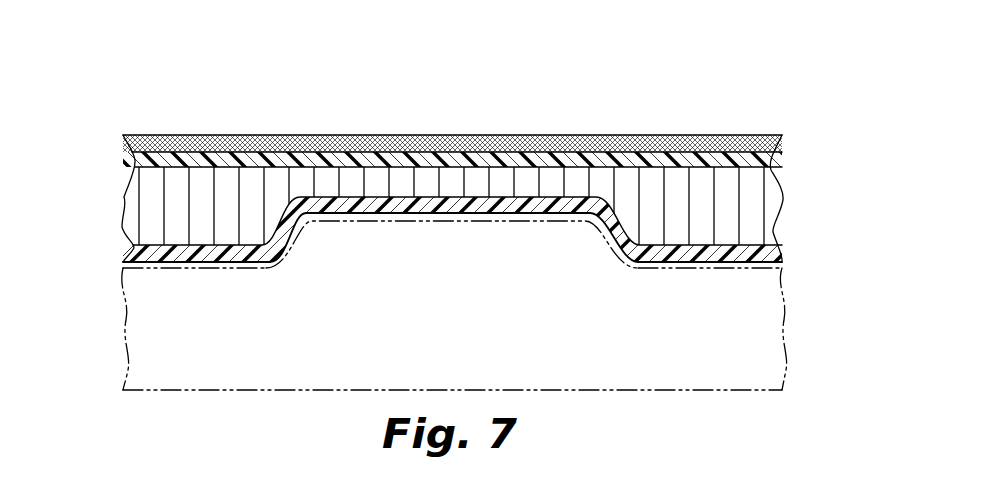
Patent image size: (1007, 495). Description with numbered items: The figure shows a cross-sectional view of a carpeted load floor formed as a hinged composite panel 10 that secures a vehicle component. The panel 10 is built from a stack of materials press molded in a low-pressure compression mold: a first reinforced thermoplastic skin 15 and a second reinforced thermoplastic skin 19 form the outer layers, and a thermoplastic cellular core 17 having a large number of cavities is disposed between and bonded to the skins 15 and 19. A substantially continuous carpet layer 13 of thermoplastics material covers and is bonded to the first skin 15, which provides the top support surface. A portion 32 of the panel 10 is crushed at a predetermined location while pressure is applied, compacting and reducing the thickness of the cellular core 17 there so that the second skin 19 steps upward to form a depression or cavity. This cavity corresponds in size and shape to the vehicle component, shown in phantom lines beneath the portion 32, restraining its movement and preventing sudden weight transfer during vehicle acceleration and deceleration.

The hinged panel 10 is at (503, 79).
The carpet layer 13 is at (124, 140).
The first reinforced thermoplastic skin 15 is at (133, 160).
The thermoplastic cellular core 17 is at (128, 204).
The second reinforced thermoplastic skin 19 is at (124, 253).
The crushed portion 32 is at (398, 233).